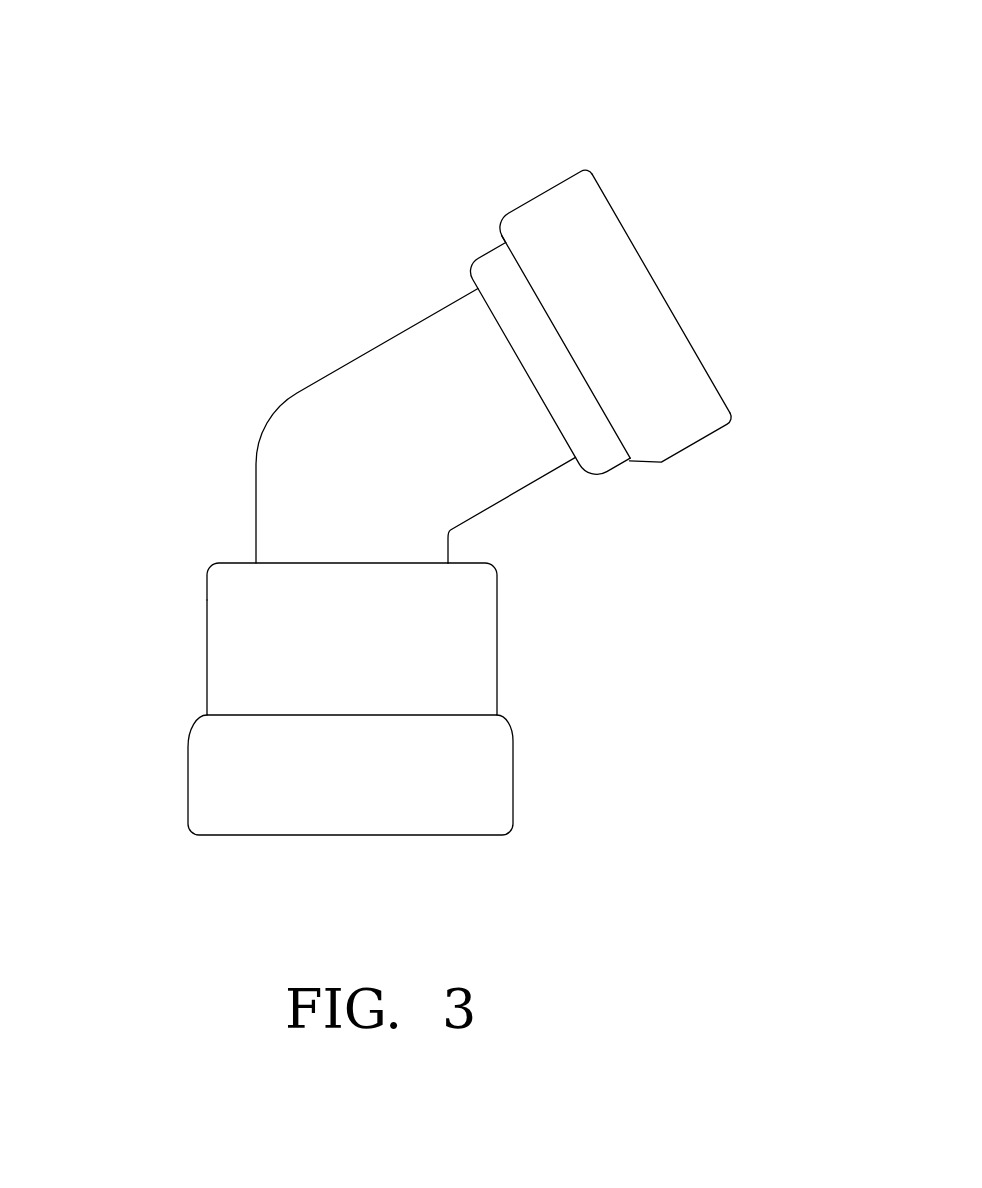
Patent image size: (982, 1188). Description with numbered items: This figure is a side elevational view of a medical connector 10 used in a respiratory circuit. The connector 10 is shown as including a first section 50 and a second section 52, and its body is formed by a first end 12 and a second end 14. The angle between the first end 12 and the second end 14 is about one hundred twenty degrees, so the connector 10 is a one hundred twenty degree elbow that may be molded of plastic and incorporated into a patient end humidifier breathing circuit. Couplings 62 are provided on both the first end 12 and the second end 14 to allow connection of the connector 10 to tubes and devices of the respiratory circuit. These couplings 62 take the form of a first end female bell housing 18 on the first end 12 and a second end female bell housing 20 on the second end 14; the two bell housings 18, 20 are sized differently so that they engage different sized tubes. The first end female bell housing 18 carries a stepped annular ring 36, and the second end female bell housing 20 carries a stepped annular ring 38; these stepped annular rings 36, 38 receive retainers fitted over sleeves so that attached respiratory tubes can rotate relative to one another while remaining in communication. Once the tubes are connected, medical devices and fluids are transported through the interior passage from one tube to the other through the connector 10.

The connector 10 is at (223, 35).
The first end 12 is at (283, 547).
The second end 14 is at (410, 357).
The first end female bell housing 18 is at (475, 697).
The second end female bell housing 20 is at (652, 443).
The stepped annular ring 36 is at (483, 795).
The stepped annular ring 38 is at (558, 202).
The first section 50 is at (400, 543).
The second section 52 is at (445, 340).
The couplings 62 is at (698, 425).